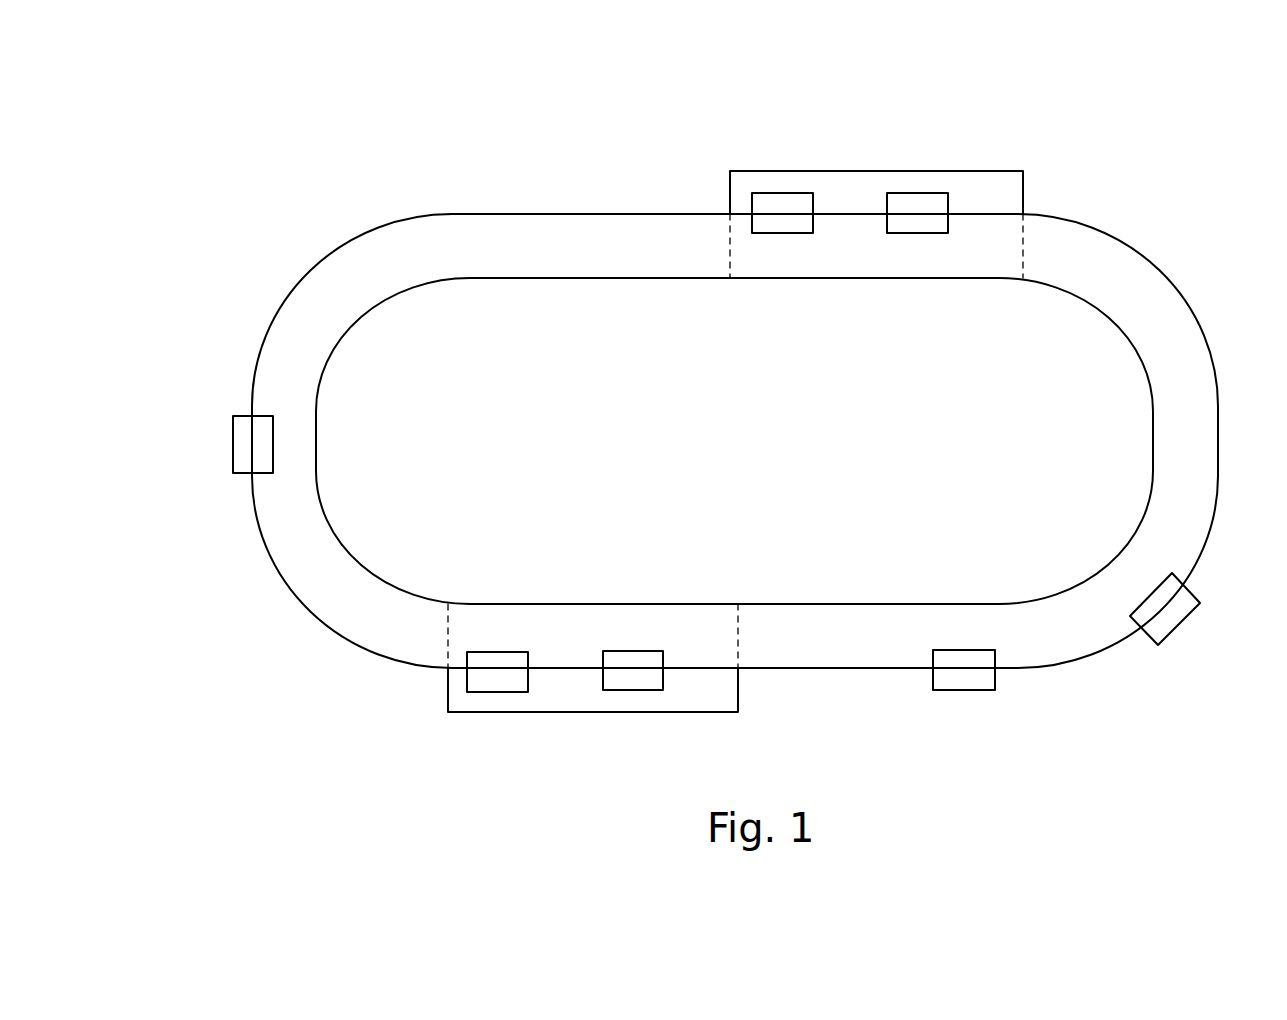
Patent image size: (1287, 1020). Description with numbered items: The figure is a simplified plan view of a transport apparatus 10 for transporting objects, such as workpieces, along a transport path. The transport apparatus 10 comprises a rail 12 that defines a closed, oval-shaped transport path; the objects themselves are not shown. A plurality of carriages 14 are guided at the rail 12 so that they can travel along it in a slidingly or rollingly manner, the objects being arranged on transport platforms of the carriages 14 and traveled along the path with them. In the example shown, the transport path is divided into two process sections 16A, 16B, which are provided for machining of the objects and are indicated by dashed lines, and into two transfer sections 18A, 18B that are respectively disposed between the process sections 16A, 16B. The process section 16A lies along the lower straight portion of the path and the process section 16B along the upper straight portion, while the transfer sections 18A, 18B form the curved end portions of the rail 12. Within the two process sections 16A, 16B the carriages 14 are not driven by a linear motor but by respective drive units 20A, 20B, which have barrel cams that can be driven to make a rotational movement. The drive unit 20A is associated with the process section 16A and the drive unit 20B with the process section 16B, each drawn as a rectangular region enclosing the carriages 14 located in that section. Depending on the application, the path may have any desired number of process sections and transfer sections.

The transport apparatus 10 is at (352, 150).
The rail 12 is at (556, 238).
The carriage 14 is at (248, 434).
The process section 16A is at (567, 600).
The process section 16B is at (870, 282).
The transfer section 18A is at (367, 320).
The transfer section 18B is at (1030, 580).
The drive unit 20A is at (698, 690).
The drive unit 20B is at (842, 188).